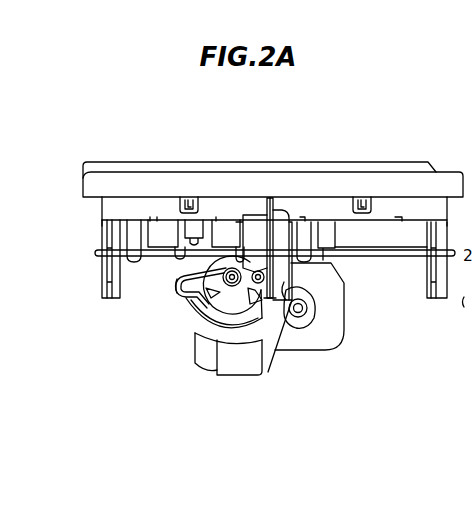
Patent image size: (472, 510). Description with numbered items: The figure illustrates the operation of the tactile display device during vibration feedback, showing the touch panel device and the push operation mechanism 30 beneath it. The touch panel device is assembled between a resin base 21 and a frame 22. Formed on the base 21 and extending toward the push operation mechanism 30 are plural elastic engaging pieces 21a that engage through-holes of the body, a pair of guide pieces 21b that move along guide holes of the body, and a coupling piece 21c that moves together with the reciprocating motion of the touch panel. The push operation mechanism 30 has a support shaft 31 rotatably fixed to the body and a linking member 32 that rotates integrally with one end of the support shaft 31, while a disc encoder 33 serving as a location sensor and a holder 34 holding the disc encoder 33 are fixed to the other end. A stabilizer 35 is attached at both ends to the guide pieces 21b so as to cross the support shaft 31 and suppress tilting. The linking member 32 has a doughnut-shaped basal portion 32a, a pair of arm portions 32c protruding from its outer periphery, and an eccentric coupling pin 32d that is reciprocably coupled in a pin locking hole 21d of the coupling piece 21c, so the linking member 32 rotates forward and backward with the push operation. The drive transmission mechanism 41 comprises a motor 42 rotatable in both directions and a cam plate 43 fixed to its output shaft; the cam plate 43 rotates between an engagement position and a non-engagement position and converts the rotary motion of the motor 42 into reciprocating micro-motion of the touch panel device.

The base 21 is at (443, 242).
The elastic engaging piece 21a is at (171, 238).
The guide piece 21b is at (104, 240).
The coupling piece 21c is at (279, 245).
The pin locking hole 21d is at (249, 240).
The frame 22 is at (262, 167).
The push operation mechanism 30 is at (189, 457).
The support shaft 31 is at (213, 295).
The linking member 32 is at (225, 325).
The basal portion 32a is at (232, 279).
The arm portion 32c is at (177, 281).
The coupling pin 32d is at (258, 283).
The disc encoder 33 is at (203, 350).
The holder 34 is at (247, 363).
The stabilizer 35 is at (97, 257).
The drive transmission mechanism 41 is at (384, 333).
The motor 42 is at (332, 318).
The cam plate 43 is at (300, 320).